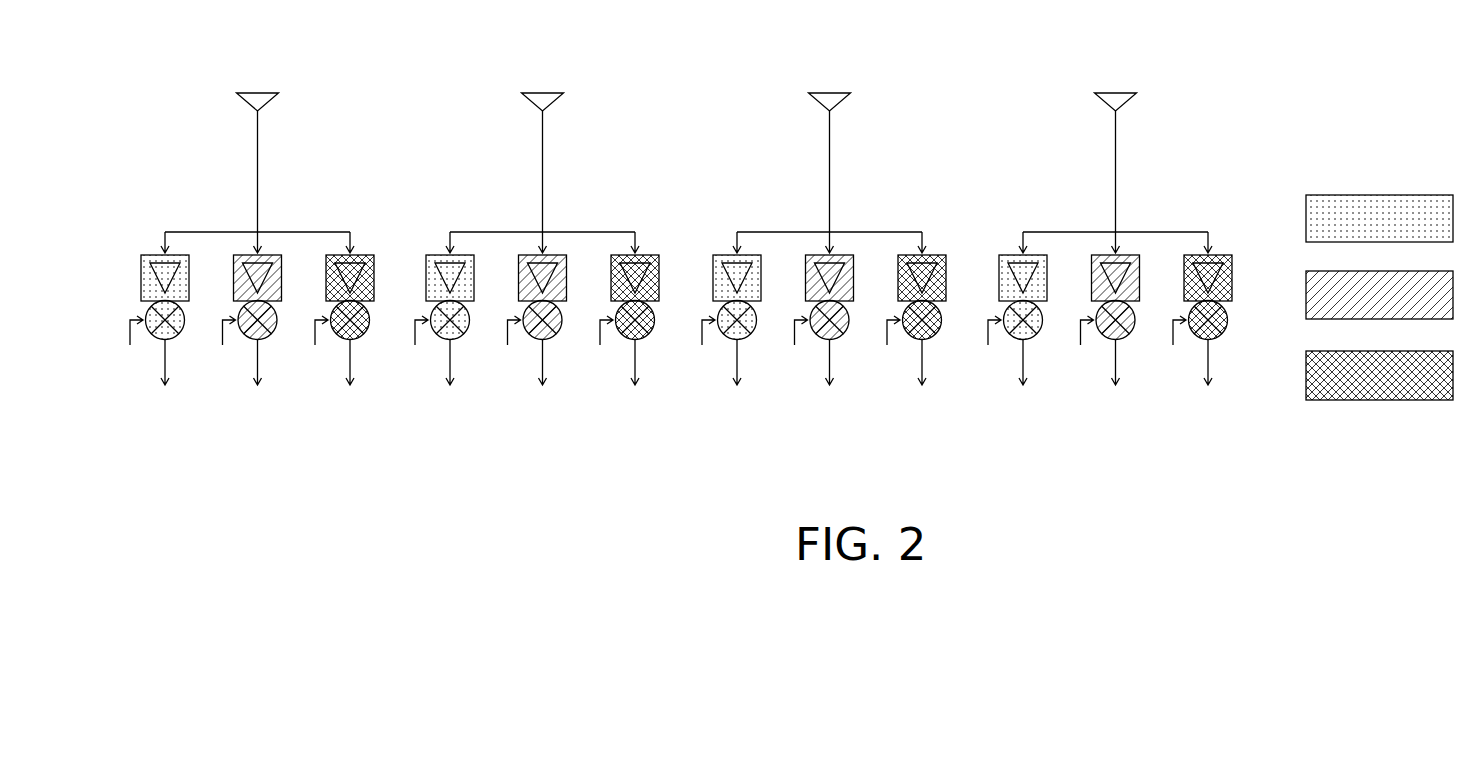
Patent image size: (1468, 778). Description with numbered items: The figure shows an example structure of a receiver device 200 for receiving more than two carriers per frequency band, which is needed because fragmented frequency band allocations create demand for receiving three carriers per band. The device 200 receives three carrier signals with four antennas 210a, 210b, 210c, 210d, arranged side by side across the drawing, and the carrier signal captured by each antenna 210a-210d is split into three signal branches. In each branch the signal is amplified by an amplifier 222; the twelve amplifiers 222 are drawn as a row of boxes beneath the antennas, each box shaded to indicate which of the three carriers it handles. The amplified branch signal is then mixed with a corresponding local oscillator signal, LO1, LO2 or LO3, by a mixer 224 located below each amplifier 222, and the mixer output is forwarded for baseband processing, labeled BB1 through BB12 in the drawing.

The device 200 is at (1372, 100).
The antenna 210a is at (272, 100).
The antenna 210b is at (557, 100).
The antenna 210c is at (844, 100).
The antenna 210d is at (1130, 100).
The amplifier 222 is at (160, 252).
The mixer 224 is at (147, 312).